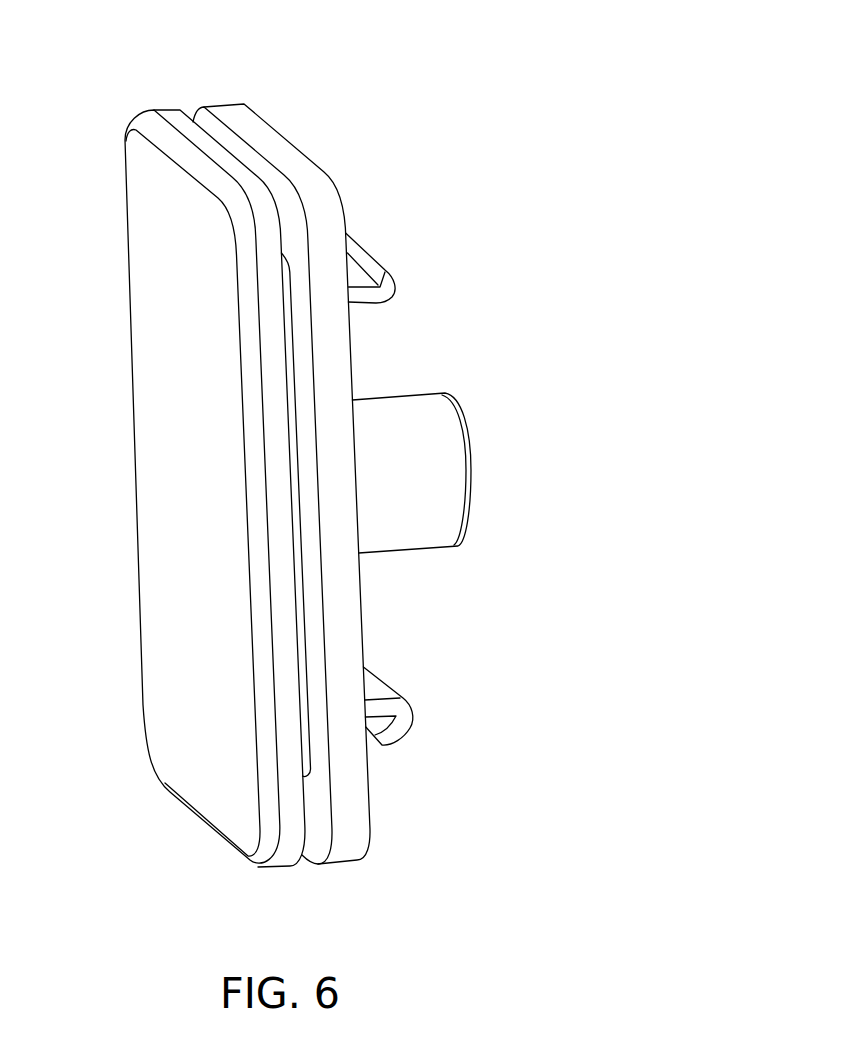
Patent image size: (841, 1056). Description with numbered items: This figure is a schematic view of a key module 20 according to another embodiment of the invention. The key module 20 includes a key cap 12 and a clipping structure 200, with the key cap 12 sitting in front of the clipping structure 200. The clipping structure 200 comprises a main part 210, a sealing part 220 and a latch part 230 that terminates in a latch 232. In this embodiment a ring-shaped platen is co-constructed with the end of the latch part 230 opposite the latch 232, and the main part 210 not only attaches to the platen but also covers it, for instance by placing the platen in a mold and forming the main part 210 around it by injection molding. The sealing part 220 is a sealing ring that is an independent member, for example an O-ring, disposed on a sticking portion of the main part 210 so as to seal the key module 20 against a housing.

The key module 20 is at (372, 125).
The key cap 12 is at (147, 246).
The clipping structure 200 is at (291, 116).
The main part 210 is at (237, 117).
The sealing part 220 is at (337, 353).
The latch part 230 is at (367, 298).
The latch 232 is at (373, 264).